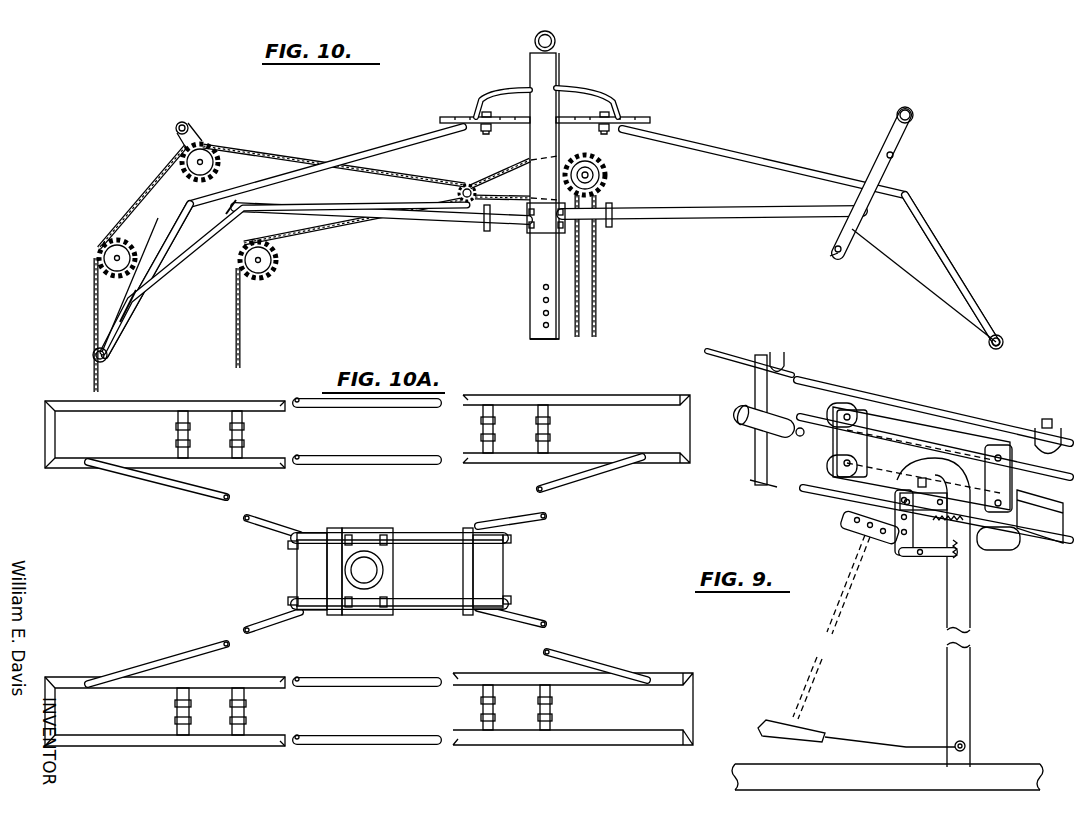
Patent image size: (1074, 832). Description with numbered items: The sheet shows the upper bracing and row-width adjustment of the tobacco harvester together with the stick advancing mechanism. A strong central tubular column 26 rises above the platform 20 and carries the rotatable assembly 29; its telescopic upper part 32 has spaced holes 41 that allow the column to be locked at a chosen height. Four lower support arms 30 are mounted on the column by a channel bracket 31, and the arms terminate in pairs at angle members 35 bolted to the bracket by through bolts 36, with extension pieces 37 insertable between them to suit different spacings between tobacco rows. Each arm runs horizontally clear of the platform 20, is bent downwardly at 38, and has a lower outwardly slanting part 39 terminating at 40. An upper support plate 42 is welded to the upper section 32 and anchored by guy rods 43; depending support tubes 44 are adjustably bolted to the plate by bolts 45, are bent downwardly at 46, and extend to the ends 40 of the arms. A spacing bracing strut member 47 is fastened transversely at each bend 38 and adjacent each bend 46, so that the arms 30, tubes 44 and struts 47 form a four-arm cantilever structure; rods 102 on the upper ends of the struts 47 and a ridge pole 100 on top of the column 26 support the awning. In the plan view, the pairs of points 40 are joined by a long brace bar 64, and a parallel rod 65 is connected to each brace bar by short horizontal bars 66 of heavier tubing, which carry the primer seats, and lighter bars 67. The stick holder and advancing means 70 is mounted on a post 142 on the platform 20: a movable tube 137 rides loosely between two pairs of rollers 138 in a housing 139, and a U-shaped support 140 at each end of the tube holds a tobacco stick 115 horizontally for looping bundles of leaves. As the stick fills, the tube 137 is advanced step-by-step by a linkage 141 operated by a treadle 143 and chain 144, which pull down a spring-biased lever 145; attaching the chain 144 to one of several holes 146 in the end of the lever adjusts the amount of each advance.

In FIG. 9, the raised platform 20 is at (777, 780).
In FIG. 10, the central tubular column 26 is at (544, 75).
In FIG. 10, the assembly 29 is at (318, 124).
In FIG. 10, the lower support arms 30 is at (418, 222).
In FIG. 10A, the lower support arms 30 is at (213, 500).
In FIG. 10, the channel bracket 31 is at (528, 234).
In FIG. 10A, the channel bracket 31 is at (372, 538).
In FIG. 10, the telescopic upper column part 32 is at (545, 247).
In FIG. 10A, the angle members 35 is at (310, 573).
In FIG. 10A, the through bolts 36 is at (512, 542).
In FIG. 10, the extension pieces 37 is at (489, 222).
In FIG. 10A, the extension pieces 37 is at (428, 534).
In FIG. 10, the downward bend 38 is at (222, 233).
In FIG. 10, the lower outwardly slanting part 39 is at (148, 323).
In FIG. 10, the arm end 40 is at (112, 360).
In FIG. 10, the spaced holes 41 is at (541, 287).
In FIG. 10, the upper support plate 42 is at (608, 113).
In FIG. 10, the guy rods 43 is at (503, 96).
In FIG. 10, the support tubes 44 is at (396, 147).
In FIG. 10, the bolts 45 is at (494, 131).
In FIG. 10, the bend in support tubes 46 is at (178, 200).
In FIG. 10, the spacing bracing strut member 47 is at (238, 204).
In FIG. 10A, the brace bar 64 is at (412, 455).
In FIG. 10A, the rod 65 is at (318, 405).
In FIG. 10A, the heavy horizontal bars 66 is at (178, 432).
In FIG. 10A, the light horizontal bars 67 is at (50, 432).
In FIG. 9, the tobacco stick holder and advancing means 70 is at (762, 536).
In FIG. 10, the ridge pole 100 is at (556, 41).
In FIG. 10, the rods 102 is at (185, 122).
In FIG. 9, the tobacco stick 115 is at (810, 378).
In FIG. 9, the movable tube 137 is at (768, 433).
In FIG. 9, the rollers 138 is at (844, 404).
In FIG. 9, the housing 139 is at (921, 437).
In FIG. 9, the U-shaped support 140 is at (777, 352).
In FIG. 9, the linkage 141 is at (900, 500).
In FIG. 9, the posts 142 is at (958, 602).
In FIG. 9, the treadle 143 is at (902, 742).
In FIG. 9, the chain 144 is at (797, 695).
In FIG. 9, the lever 145 is at (855, 528).
In FIG. 9, the holes 146 is at (879, 541).